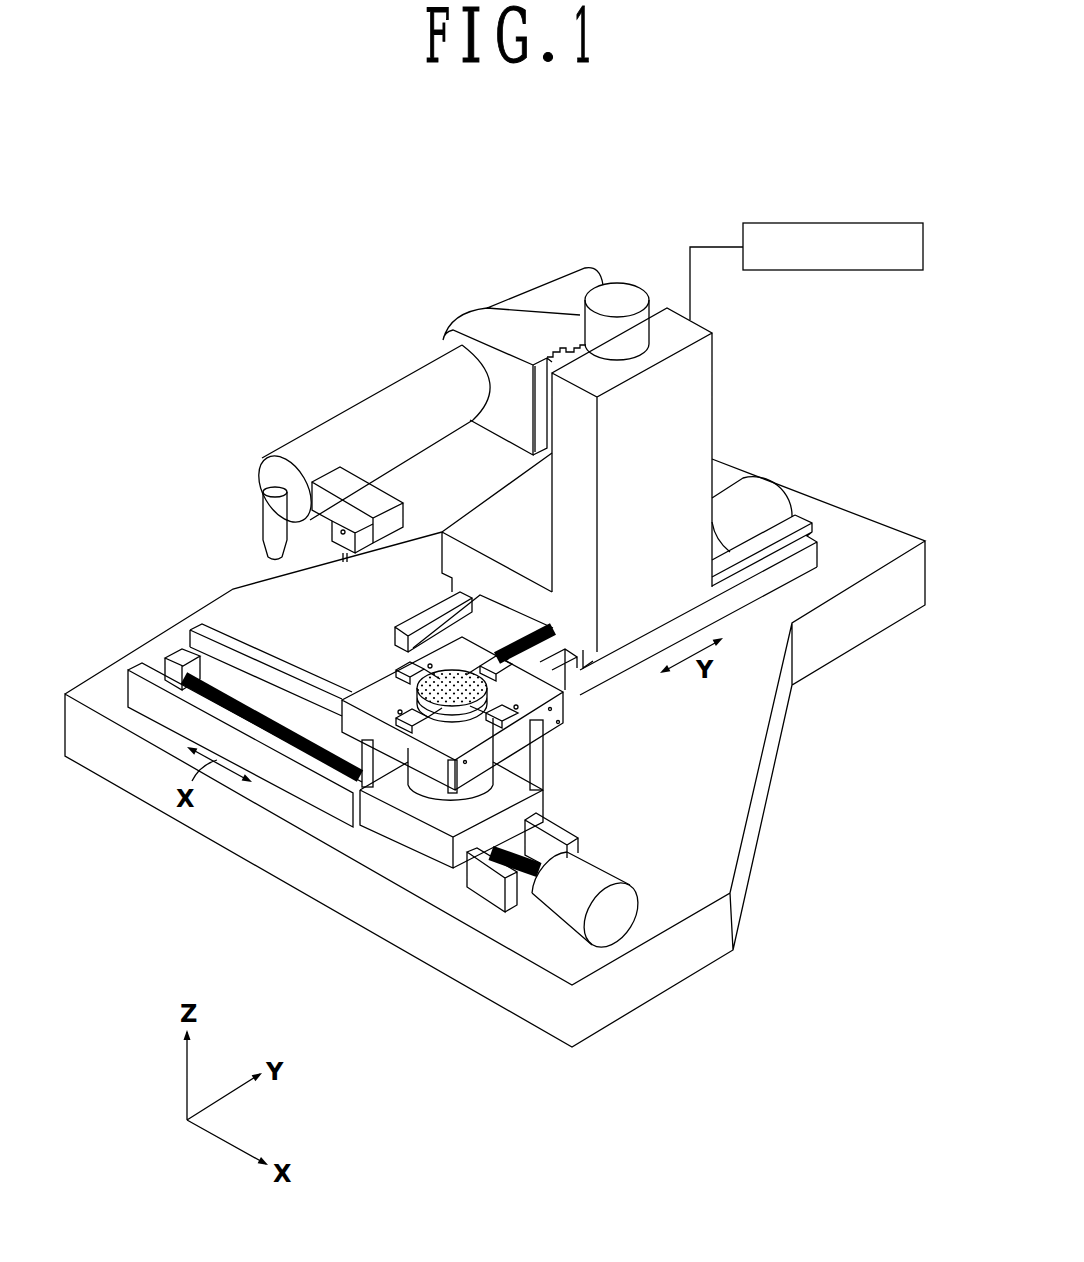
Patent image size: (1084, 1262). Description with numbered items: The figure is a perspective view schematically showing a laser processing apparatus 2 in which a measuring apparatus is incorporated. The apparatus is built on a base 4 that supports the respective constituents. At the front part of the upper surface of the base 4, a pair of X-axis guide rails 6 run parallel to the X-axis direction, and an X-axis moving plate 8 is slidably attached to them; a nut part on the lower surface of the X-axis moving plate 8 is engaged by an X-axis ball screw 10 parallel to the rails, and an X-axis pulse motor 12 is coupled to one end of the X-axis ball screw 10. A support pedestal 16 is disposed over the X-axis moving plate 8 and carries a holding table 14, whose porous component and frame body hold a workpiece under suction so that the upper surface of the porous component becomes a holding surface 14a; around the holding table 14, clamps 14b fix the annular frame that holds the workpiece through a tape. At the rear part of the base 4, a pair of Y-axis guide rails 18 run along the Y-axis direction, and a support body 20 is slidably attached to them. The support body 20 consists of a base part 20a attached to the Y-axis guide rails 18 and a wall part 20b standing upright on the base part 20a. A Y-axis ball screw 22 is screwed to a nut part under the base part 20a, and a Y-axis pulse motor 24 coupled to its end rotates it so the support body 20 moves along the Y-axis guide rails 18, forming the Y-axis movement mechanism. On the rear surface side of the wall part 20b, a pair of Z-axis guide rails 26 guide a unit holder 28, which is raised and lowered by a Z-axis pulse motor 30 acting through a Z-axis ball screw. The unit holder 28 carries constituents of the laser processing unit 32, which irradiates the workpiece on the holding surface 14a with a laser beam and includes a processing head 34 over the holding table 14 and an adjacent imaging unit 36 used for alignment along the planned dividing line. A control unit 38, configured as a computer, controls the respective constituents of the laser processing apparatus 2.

The laser processing apparatus 2 is at (248, 305).
The base 4 is at (800, 597).
The X-axis guide rails 6 is at (197, 630).
The X-axis moving plate 8 is at (377, 817).
The X-axis ball screw 10 is at (242, 692).
The X-axis pulse motor 12 is at (612, 925).
The holding table 14 is at (398, 690).
The holding surface 14a is at (408, 693).
The clamps 14b is at (498, 700).
The support pedestal 16 is at (453, 745).
The Y-axis guide rails 18 is at (437, 615).
The support body 20 is at (857, 715).
The base part 20a is at (542, 567).
The wall part 20b is at (647, 502).
The Y-axis ball screw 22 is at (532, 652).
The Y-axis pulse motor 24 is at (760, 487).
The Z-axis guide rails 26 is at (563, 352).
The unit holder 28 is at (502, 322).
The Z-axis pulse motor 30 is at (615, 300).
The laser processing unit 32 is at (377, 387).
The processing head 34 is at (272, 490).
The imaging unit 36 is at (348, 512).
The control unit 38 is at (790, 223).